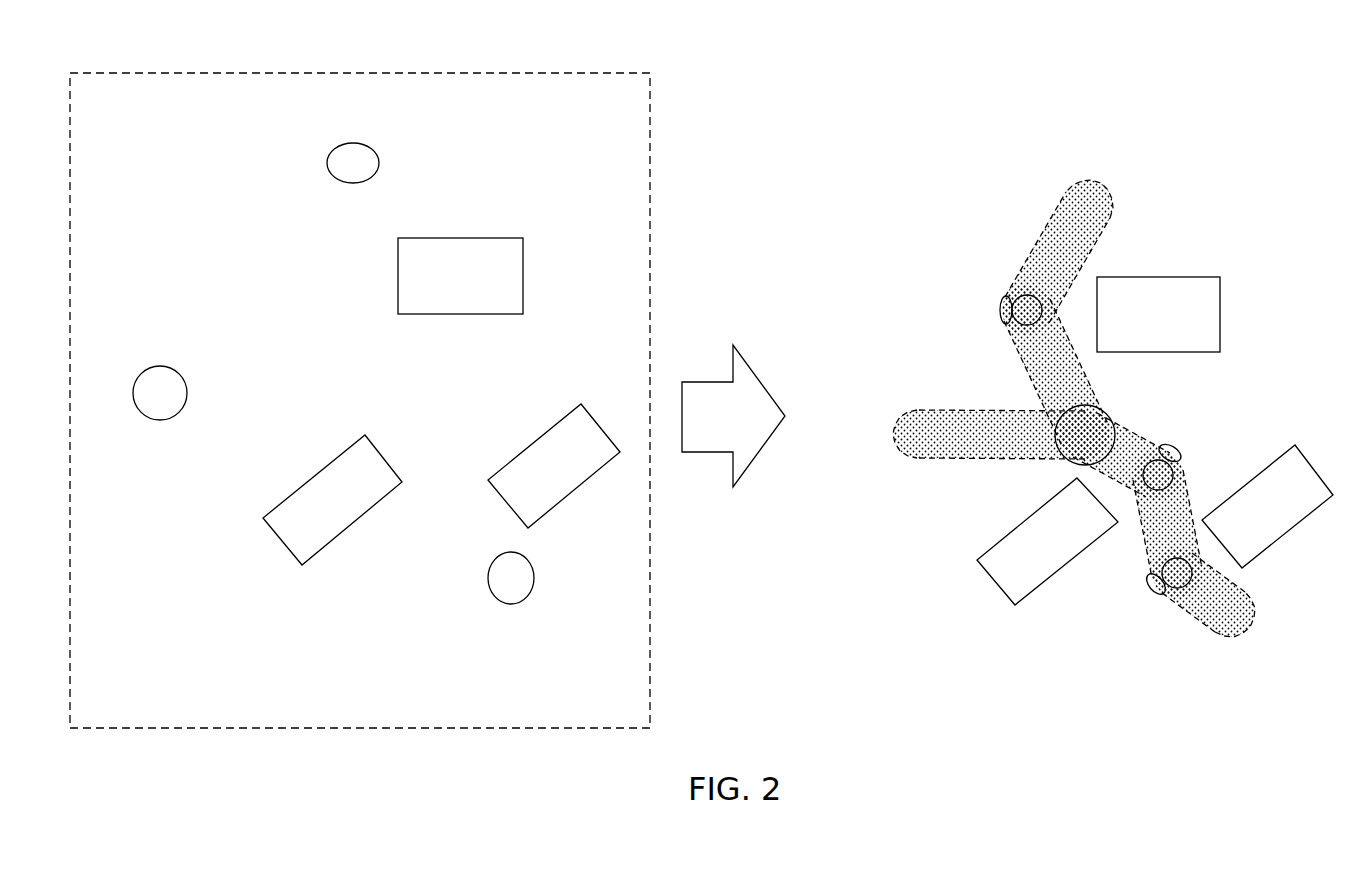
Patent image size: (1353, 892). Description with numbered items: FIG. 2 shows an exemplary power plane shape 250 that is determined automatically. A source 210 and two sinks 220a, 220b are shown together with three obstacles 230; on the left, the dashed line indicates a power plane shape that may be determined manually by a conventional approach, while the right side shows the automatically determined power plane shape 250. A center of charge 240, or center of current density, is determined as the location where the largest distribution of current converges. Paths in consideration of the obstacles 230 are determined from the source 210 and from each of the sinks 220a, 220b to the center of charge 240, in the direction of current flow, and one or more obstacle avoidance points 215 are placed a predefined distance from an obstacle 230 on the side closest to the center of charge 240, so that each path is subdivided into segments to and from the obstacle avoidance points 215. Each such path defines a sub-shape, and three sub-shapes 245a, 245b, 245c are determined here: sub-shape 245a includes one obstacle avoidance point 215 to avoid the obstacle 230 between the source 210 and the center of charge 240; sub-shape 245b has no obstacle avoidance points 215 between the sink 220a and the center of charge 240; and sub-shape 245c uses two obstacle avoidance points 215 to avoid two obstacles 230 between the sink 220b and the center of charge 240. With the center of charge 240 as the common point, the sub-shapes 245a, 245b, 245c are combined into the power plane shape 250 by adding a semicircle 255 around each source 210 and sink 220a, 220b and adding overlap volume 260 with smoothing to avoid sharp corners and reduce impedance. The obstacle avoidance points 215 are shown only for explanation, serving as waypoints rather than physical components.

The source 210 is at (368, 172).
The obstacle avoidance point 215 is at (1032, 320).
The sink 220a is at (181, 402).
The sink 220b is at (532, 587).
The obstacle 230 is at (446, 328).
The center of charge 240 is at (1103, 446).
The sub-shape 245a is at (1068, 320).
The sub-shape 245b is at (967, 408).
The sub-shape 245c is at (1120, 477).
The power plane shape 250 is at (1037, 180).
The semicircle 255 is at (1113, 180).
The overlap volume 260 is at (1000, 307).